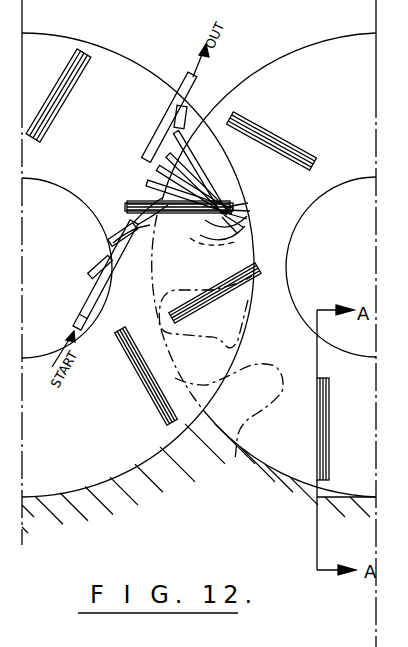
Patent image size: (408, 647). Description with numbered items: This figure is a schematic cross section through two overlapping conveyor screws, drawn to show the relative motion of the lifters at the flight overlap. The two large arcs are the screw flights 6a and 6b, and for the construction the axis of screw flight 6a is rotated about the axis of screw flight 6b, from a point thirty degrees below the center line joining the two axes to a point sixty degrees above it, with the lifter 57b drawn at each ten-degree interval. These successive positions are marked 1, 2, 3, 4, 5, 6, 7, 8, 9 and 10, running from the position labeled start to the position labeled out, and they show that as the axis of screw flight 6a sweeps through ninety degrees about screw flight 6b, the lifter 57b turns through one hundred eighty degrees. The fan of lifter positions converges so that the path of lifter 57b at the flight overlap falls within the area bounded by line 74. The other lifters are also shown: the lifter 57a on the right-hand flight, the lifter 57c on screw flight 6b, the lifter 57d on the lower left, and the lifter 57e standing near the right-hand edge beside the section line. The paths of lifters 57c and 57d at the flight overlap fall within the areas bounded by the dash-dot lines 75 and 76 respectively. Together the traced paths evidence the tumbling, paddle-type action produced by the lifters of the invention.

The screw flight 6a is at (103, 43).
The screw flight 6b is at (292, 47).
The lifter 57a is at (272, 130).
The lifter 57b is at (133, 203).
The lifter 57c is at (262, 272).
The lifter 57d is at (136, 363).
The lifter 57e is at (316, 413).
The line 74 is at (236, 208).
The line 75 is at (167, 287).
The line 76 is at (253, 363).
The blade position 1 is at (98, 275).
The blade position 2 is at (93, 271).
The blade position 3 is at (112, 235).
The blade position 4 is at (169, 211).
The blade position 5 is at (183, 195).
The blade position 6 is at (188, 187).
The blade position 7 is at (193, 179).
The blade position 8 is at (188, 137).
The blade position 9 is at (186, 109).
The blade position 10 is at (169, 109).